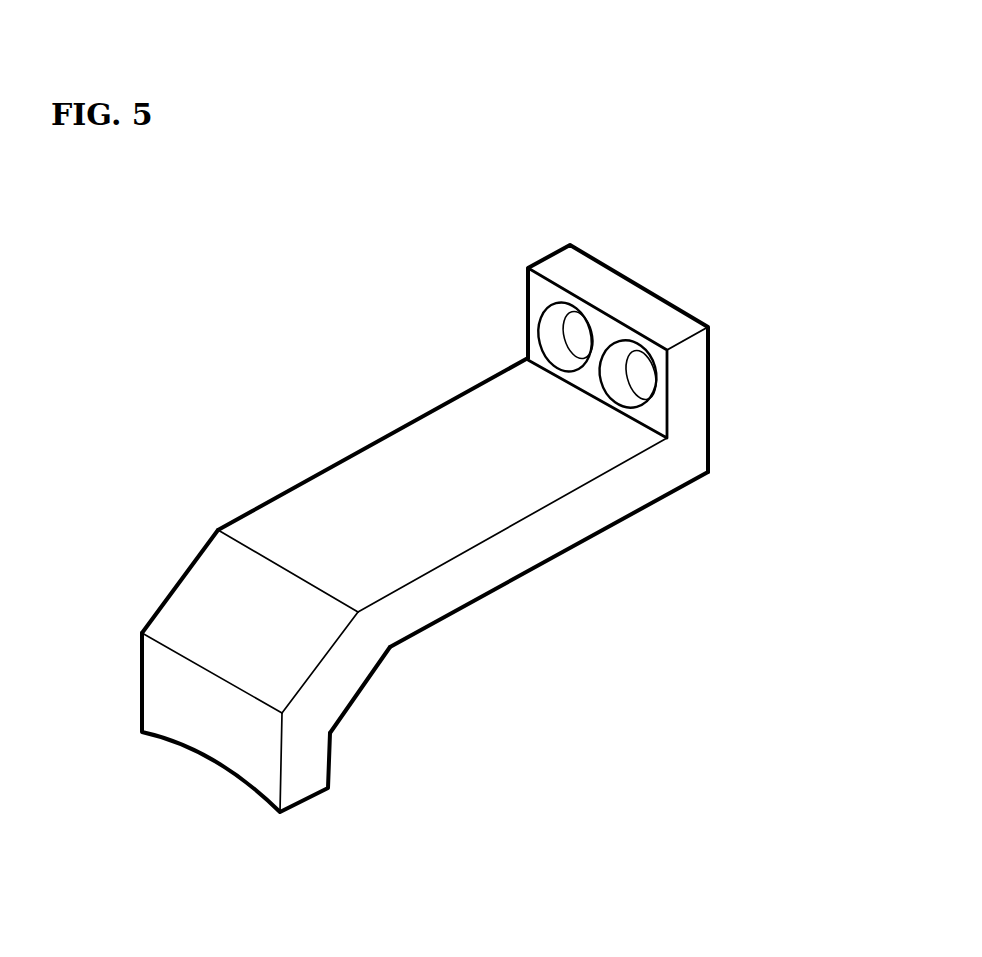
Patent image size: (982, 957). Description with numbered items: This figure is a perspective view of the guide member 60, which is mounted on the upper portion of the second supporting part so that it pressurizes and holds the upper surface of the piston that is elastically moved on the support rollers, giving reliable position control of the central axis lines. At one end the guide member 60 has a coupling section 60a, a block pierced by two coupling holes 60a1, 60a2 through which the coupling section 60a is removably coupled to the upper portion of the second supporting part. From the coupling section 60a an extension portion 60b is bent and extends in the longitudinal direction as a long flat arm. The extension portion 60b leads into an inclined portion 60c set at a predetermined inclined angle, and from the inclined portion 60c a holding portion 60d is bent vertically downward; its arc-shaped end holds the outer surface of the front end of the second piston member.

The guide member 60 is at (437, 392).
The coupling section 60a is at (598, 325).
The coupling hole 60a1 is at (562, 322).
The coupling hole 60a2 is at (667, 412).
The extension portion 60b is at (362, 487).
The inclined portion 60c is at (196, 586).
The holding portion 60d is at (218, 757).